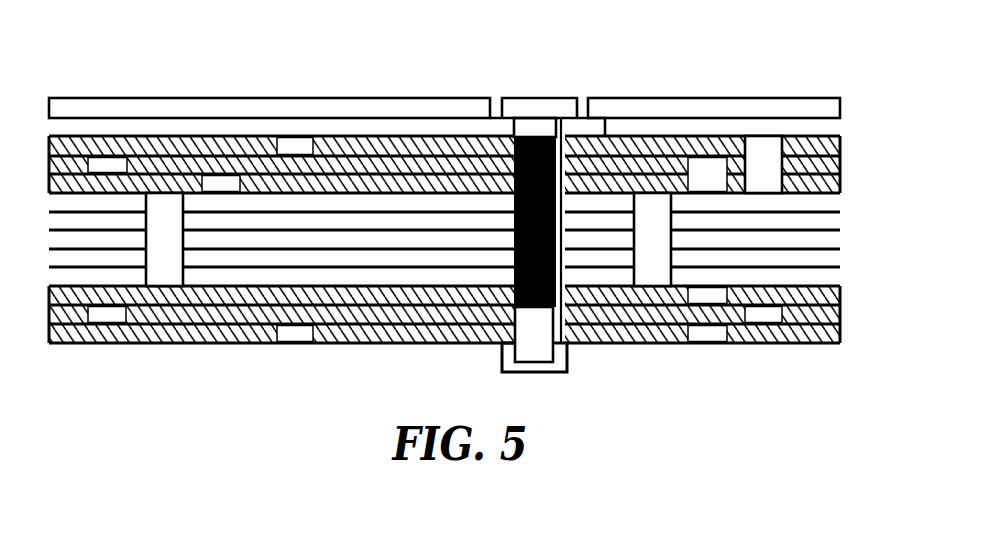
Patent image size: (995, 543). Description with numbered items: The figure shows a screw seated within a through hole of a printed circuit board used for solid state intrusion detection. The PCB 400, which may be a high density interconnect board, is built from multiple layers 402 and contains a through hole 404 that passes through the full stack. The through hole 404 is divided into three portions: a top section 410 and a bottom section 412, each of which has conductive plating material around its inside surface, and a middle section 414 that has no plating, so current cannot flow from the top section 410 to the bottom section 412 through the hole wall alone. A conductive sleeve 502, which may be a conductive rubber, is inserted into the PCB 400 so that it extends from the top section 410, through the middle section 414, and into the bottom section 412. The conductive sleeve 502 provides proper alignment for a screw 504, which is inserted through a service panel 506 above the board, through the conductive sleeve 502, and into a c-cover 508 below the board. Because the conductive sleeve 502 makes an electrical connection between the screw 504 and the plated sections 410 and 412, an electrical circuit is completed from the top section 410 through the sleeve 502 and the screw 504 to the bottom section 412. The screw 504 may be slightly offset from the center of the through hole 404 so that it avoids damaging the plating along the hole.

The PCB 400 is at (708, 57).
The layers 402 is at (840, 178).
The through hole 404 is at (568, 170).
The top section 410 is at (564, 136).
The bottom section 412 is at (568, 343).
The middle section 414 is at (556, 250).
The conductive sleeve 502 is at (561, 118).
The screw 504 is at (535, 98).
The service panel 506 is at (430, 98).
The c-cover 508 is at (508, 362).